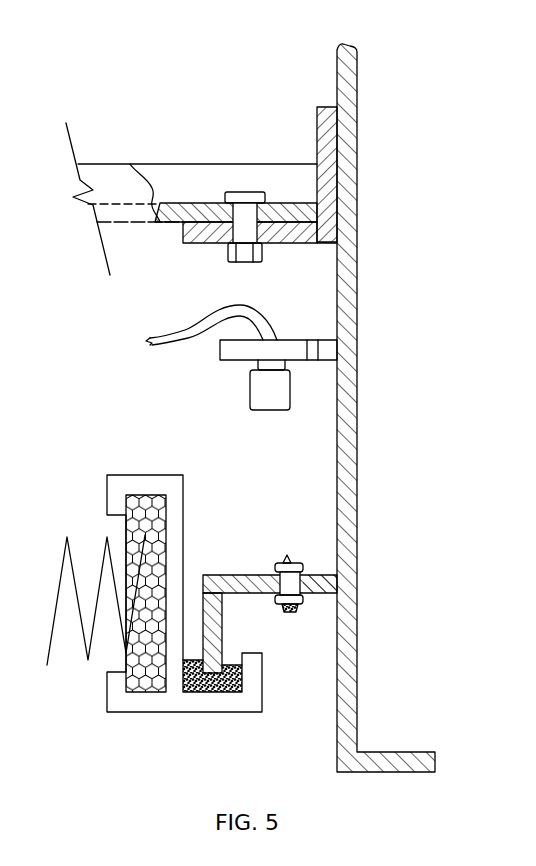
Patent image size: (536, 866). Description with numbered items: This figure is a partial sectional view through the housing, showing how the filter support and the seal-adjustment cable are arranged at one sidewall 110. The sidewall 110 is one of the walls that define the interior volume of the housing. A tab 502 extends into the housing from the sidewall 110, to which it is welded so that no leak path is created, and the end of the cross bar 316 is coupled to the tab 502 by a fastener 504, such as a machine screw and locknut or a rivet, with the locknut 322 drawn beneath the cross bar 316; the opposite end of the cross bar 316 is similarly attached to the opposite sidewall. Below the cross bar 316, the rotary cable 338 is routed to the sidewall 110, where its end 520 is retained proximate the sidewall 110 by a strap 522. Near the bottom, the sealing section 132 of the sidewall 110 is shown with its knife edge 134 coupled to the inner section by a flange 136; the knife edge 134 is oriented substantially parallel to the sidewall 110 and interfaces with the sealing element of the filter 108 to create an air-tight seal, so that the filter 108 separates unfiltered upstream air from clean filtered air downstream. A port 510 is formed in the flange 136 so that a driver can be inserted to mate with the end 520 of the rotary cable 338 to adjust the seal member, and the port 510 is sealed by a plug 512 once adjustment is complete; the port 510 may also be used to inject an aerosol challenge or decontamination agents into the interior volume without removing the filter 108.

The sidewall 110 is at (353, 130).
The tab 502 is at (323, 125).
The cross bar 316 is at (115, 175).
The fastener 504 is at (243, 190).
The nut 322 is at (246, 262).
The strap 522 is at (296, 345).
The rotary cable 338 is at (165, 341).
The end 520 is at (262, 392).
The filter 108 is at (127, 475).
The sealing section 132 is at (302, 575).
The flange 136 is at (220, 575).
The port 510 is at (305, 582).
The knife edge 134 is at (222, 618).
The plug 512 is at (277, 563).